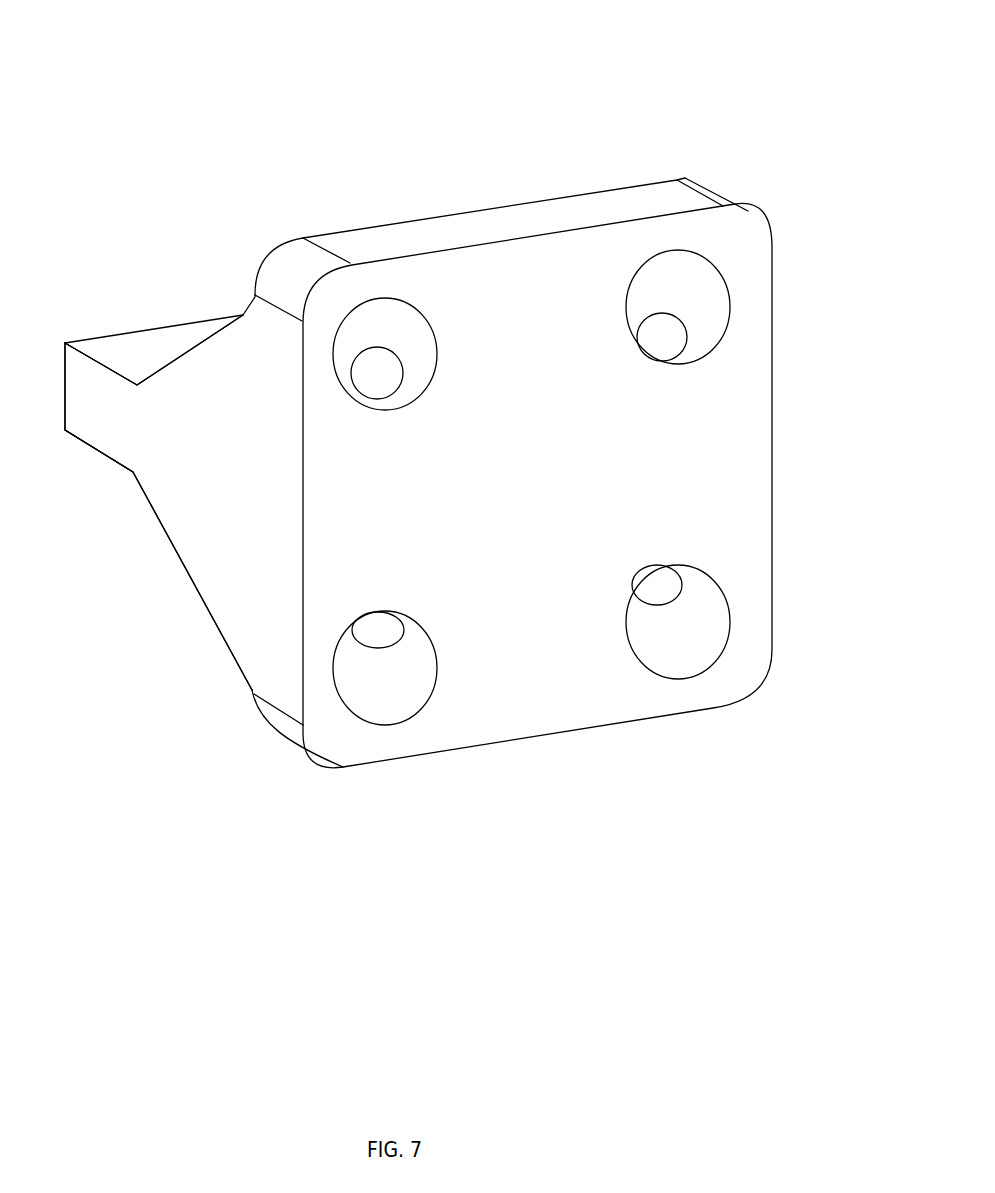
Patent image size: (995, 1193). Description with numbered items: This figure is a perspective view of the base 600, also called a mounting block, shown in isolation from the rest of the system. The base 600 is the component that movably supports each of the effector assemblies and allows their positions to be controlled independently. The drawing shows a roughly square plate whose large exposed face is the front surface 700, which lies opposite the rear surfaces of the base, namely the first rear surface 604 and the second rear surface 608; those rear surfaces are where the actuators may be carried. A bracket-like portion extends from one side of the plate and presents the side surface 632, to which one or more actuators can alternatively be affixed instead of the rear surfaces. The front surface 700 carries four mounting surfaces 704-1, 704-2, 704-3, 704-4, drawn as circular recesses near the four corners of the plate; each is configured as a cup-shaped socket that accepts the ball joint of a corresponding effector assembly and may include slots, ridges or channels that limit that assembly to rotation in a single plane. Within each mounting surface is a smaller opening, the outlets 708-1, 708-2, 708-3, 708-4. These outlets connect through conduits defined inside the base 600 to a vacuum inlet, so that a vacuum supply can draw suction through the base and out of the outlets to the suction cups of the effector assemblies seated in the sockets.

The base 600 is at (542, 130).
The first rear surface 604 is at (192, 343).
The second rear surface 608 is at (180, 562).
The side surface 632 is at (260, 499).
The front surface 700 is at (533, 722).
The mounting surface 704-1 is at (398, 313).
The mounting surface 704-2 is at (688, 265).
The mounting surface 704-3 is at (675, 652).
The mounting surface 704-4 is at (373, 688).
The outlet 708-1 is at (373, 370).
The outlet 708-2 is at (665, 338).
The outlet 708-3 is at (665, 587).
The outlet 708-4 is at (365, 633).